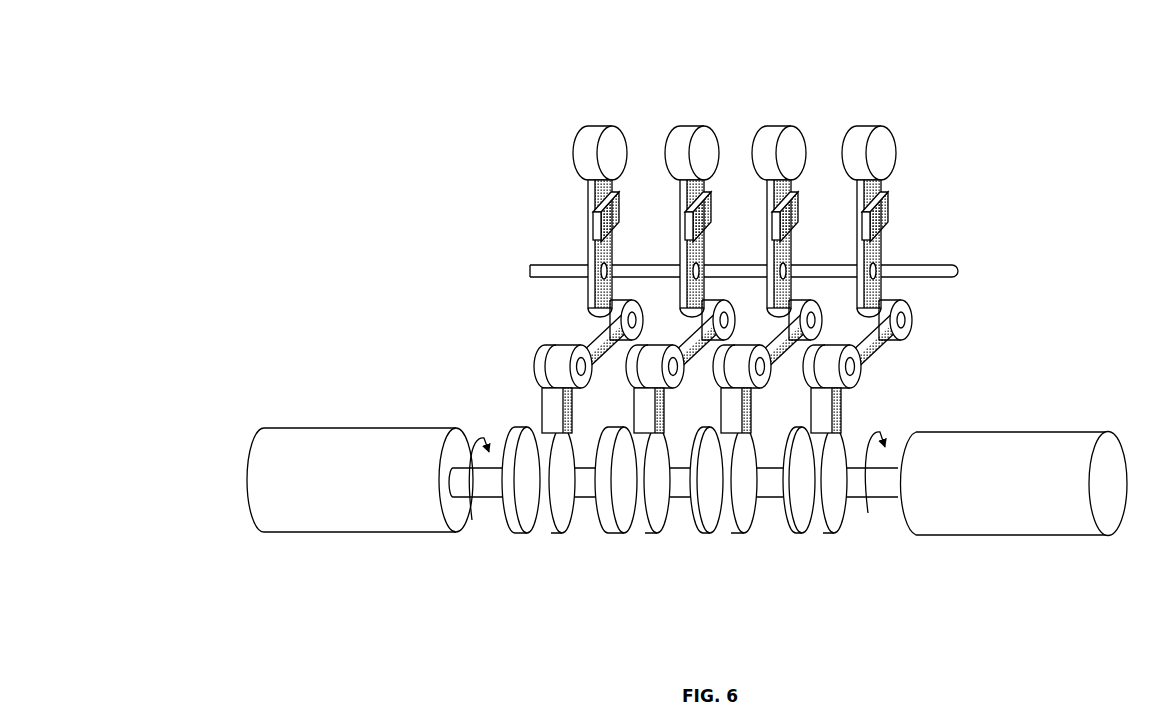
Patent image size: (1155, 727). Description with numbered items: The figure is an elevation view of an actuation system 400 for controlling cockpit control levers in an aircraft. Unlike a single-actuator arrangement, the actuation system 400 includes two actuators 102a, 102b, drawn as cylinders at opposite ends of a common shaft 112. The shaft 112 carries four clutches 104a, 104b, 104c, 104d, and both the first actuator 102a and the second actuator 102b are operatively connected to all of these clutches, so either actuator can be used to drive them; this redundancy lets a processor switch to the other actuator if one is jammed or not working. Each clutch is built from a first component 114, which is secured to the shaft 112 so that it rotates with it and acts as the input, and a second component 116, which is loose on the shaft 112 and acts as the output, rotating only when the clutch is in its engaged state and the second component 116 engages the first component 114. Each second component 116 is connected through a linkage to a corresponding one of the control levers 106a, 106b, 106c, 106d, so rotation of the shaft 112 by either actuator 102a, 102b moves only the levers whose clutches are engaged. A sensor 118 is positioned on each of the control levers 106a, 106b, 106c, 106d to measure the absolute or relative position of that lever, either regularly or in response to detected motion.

The actuation system 400 is at (286, 48).
The first actuator 102a is at (321, 517).
The second actuator 102b is at (1005, 525).
The clutch 104a is at (523, 415).
The clutch 104b is at (591, 546).
The clutch 104c is at (758, 433).
The clutch 104d is at (853, 430).
The control lever 106a is at (590, 140).
The control lever 106b is at (686, 140).
The control lever 106c is at (770, 142).
The control lever 106d is at (862, 140).
The shaft 112 is at (490, 482).
The first component 114 is at (612, 518).
The second component 116 is at (642, 518).
The sensor 118 is at (622, 202).